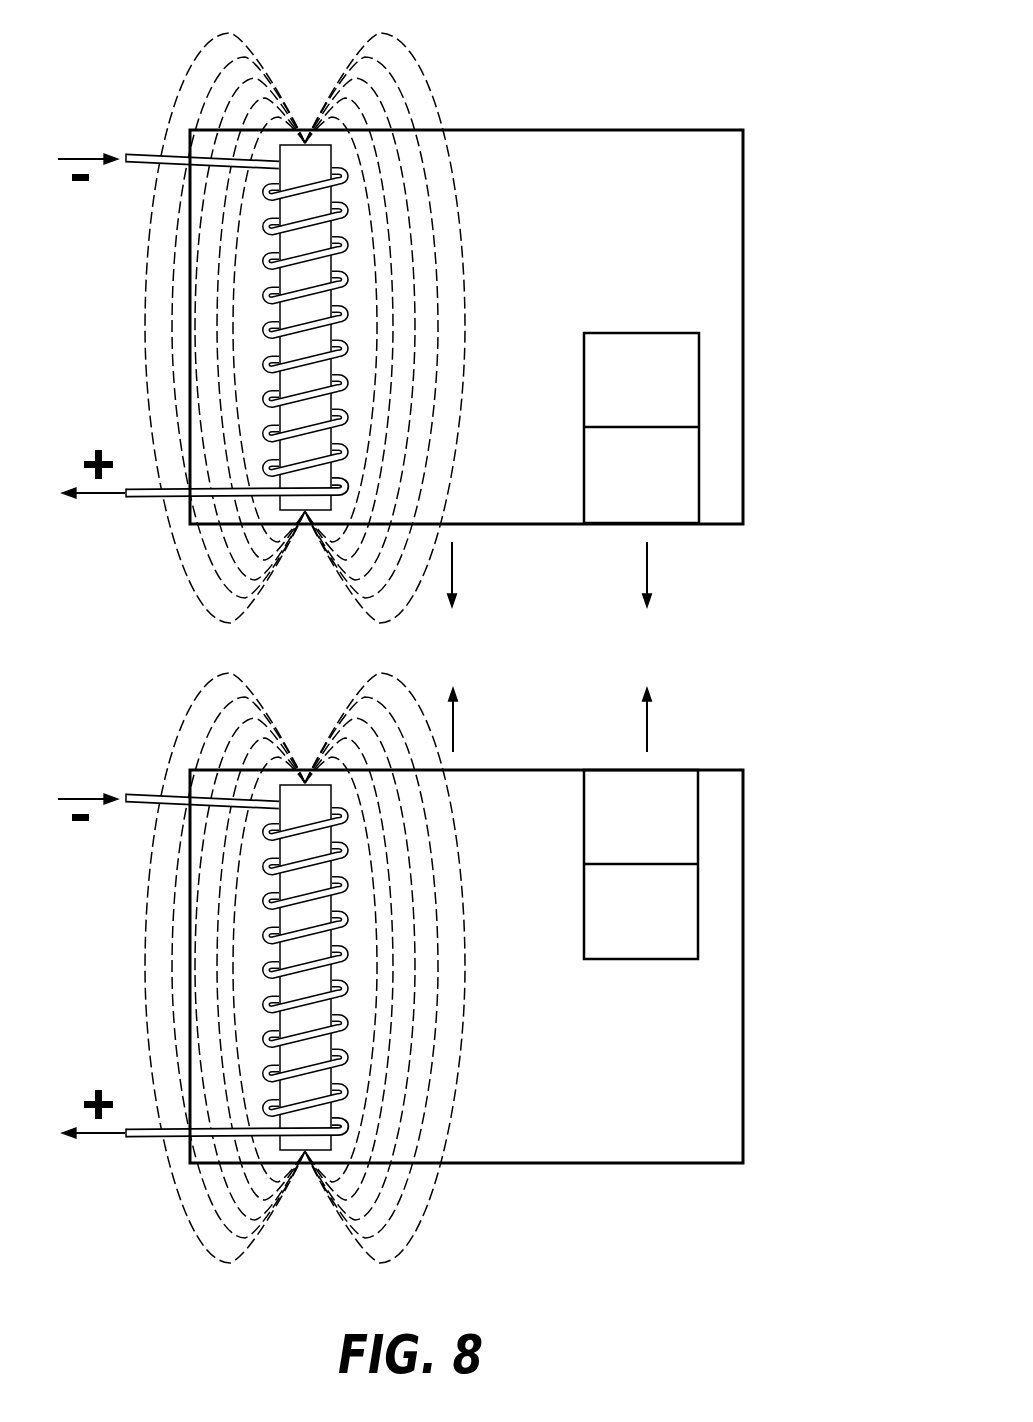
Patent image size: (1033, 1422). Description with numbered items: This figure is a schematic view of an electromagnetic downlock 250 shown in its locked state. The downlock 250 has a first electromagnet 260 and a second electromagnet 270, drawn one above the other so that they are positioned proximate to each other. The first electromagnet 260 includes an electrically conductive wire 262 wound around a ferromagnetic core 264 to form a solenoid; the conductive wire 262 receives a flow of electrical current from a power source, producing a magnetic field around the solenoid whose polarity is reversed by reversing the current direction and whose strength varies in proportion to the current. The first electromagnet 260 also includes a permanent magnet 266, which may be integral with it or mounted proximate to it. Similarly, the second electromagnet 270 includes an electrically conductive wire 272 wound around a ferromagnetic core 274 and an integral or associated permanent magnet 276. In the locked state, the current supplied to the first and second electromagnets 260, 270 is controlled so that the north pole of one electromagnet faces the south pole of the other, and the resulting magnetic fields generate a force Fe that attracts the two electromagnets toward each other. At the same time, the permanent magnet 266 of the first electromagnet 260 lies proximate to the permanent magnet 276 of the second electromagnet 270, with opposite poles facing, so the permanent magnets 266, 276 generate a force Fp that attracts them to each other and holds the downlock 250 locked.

The downlock 250 is at (782, 53).
The first electromagnet 260 is at (679, 126).
The electrically conductive wire 262 is at (148, 498).
The ferromagnetic core 264 is at (290, 314).
The permanent magnet 266 is at (708, 405).
The second electromagnet 270 is at (681, 1168).
The electrically conductive wire 272 is at (148, 1138).
The ferromagnetic core 274 is at (290, 954).
The permanent magnet 276 is at (708, 875).